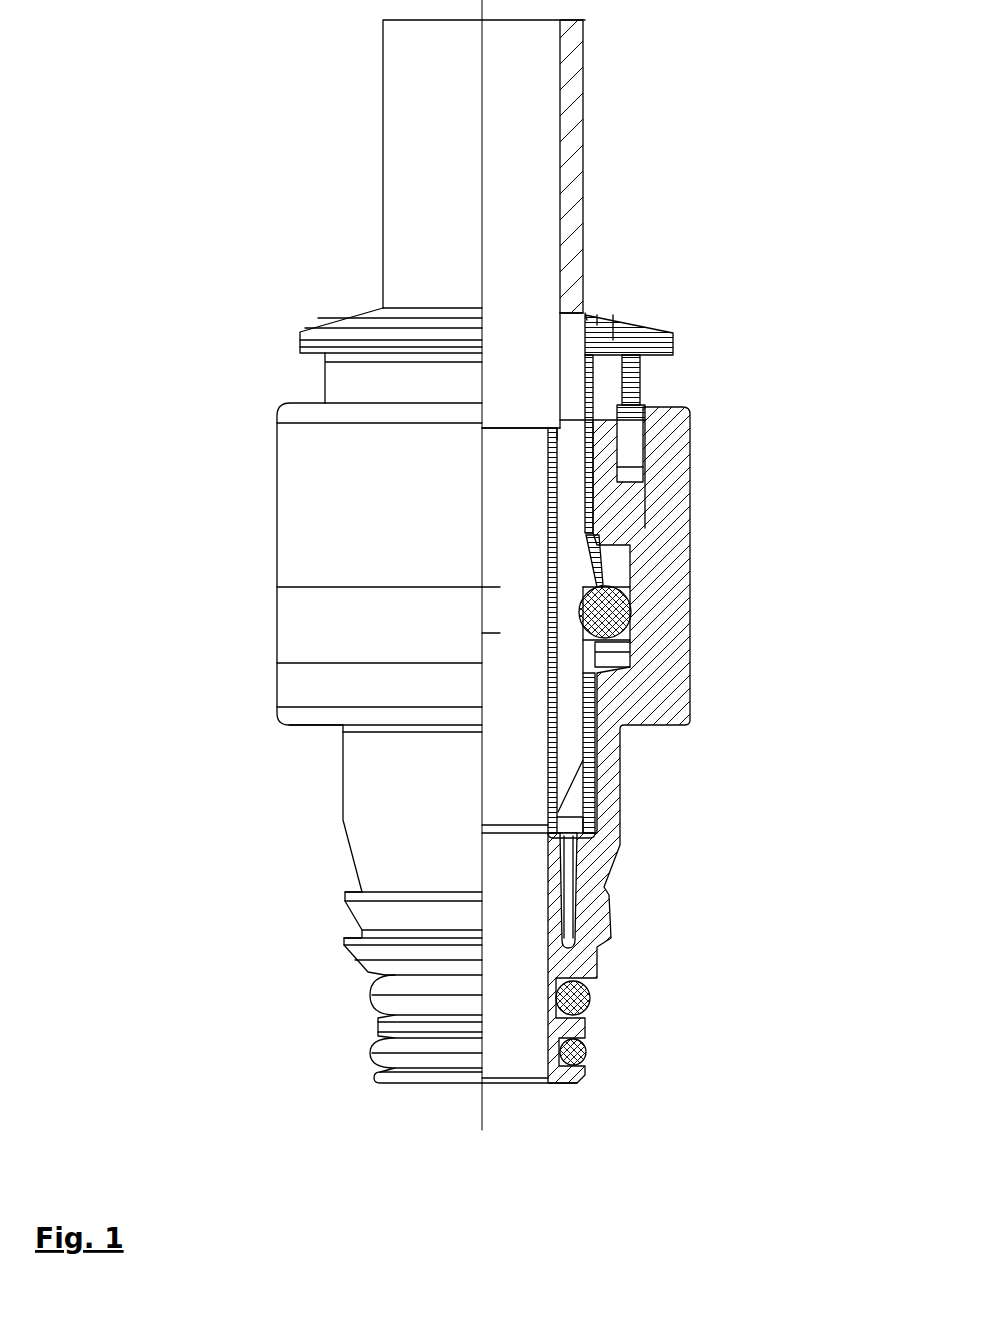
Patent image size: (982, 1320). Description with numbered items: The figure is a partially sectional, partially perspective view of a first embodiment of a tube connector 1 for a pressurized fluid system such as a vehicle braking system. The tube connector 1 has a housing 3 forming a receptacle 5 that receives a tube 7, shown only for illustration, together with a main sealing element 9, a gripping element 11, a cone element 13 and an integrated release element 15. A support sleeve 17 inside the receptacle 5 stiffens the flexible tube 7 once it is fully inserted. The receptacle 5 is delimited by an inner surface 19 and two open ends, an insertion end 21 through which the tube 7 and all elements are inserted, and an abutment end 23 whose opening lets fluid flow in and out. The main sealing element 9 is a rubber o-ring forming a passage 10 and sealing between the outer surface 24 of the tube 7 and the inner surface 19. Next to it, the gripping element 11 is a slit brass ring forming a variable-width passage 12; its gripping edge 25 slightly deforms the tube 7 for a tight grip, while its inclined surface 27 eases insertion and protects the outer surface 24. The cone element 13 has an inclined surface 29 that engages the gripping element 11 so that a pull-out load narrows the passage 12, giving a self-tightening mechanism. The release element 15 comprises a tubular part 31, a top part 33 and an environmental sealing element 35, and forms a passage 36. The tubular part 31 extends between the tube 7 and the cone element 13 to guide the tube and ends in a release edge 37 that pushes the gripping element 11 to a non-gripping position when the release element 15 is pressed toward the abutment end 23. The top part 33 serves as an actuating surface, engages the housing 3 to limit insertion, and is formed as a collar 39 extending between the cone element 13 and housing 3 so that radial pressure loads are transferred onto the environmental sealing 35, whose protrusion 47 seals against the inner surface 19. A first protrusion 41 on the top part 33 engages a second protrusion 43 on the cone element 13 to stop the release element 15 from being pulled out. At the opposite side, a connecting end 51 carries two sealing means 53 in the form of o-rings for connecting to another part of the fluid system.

The tube connector 1 is at (247, 150).
The housing 3 is at (315, 545).
The receptacle 5 is at (640, 668).
The tube 7 is at (420, 153).
The main sealing element 9 is at (633, 620).
The passage 10 is at (507, 624).
The gripping element 11 is at (622, 605).
The passage 12 is at (507, 574).
The cone element 13 is at (668, 482).
The integrated release element 15 is at (359, 290).
The support sleeve 17 is at (593, 777).
The inner surface 19 is at (608, 652).
The insertion end 21 is at (299, 385).
The abutment end 23 is at (522, 1112).
The outer surface 24 is at (590, 178).
The gripping edge 25 is at (585, 580).
The inclined surface 27 is at (556, 575).
The inclined surface 29 is at (620, 548).
The tubular part 31 is at (585, 473).
The top part 33 is at (655, 322).
The environmental sealing element 35 is at (585, 330).
The passage 36 is at (539, 345).
The release edge 37 is at (610, 497).
The collar 39 is at (632, 385).
The first protrusion 41 is at (600, 415).
The second protrusion 43 is at (612, 420).
The protrusion 47 is at (642, 418).
The connecting end 51 is at (284, 975).
The sealing means 53 is at (395, 1049).